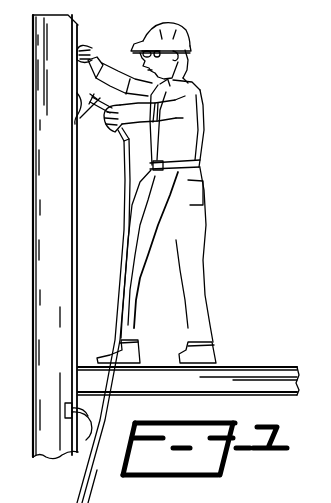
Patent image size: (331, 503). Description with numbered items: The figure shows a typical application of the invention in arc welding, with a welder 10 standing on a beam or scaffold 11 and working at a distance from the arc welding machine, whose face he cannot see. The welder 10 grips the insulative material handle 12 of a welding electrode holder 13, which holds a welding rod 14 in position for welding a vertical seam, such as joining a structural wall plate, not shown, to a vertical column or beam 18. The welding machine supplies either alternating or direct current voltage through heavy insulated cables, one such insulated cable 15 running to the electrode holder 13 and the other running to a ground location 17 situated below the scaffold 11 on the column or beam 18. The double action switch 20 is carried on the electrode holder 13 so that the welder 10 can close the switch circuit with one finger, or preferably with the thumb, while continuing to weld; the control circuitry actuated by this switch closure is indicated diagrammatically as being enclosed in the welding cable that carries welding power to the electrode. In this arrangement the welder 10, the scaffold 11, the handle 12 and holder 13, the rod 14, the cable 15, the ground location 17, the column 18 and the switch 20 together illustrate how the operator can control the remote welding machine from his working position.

The welder 10 is at (200, 135).
The beam or scaffold 11 is at (271, 363).
The insulative material handle 12 is at (116, 163).
The welding electrode holder 13 is at (101, 144).
The welding rod 14 is at (77, 93).
The insulated cable 15 is at (127, 180).
The ground location 17 is at (66, 408).
The vertical column or beam 18 is at (63, 234).
The double action switch 20 is at (112, 82).